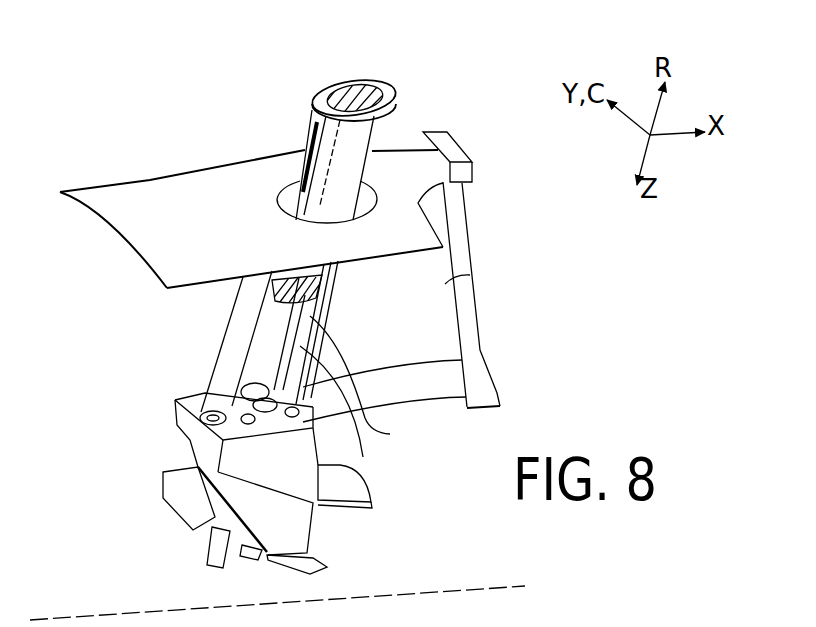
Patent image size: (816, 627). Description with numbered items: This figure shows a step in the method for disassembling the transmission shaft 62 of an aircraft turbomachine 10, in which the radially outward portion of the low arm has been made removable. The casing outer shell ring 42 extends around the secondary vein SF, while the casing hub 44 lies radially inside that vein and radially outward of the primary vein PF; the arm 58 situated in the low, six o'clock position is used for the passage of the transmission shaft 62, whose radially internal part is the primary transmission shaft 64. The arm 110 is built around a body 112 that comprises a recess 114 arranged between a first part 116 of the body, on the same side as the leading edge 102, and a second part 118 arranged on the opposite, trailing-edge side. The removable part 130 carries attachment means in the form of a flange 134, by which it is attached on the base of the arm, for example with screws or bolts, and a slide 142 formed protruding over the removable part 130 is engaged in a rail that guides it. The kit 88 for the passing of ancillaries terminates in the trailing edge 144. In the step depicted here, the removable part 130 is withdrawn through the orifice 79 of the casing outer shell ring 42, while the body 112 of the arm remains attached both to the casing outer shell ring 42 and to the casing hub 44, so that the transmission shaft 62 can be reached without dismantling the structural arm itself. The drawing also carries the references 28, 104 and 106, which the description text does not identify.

The turbomachine 10 is at (123, 138).
The engine centerline axis 28 is at (523, 587).
The casing outer shell ring 42 is at (150, 202).
The casing hub 44 is at (174, 400).
The arm 58 is at (300, 527).
The transmission shaft 62 is at (205, 553).
The primary transmission shaft 64 is at (162, 554).
The orifice 79 is at (290, 187).
The kit for the passing of ancillaries 88 is at (472, 267).
The leading edge 102 is at (218, 331).
The tube axis 104 is at (343, 80).
The tube opening 106 is at (362, 78).
The arm 110 is at (222, 340).
The body of the arm 112 is at (212, 368).
The recess 114 is at (360, 407).
The first part of the body 116 is at (185, 384).
The second part of the body 118 is at (375, 381).
The removable part 130 is at (378, 135).
The flange 134 is at (385, 93).
The slide 142 is at (307, 138).
The trailing edge 144 is at (476, 287).